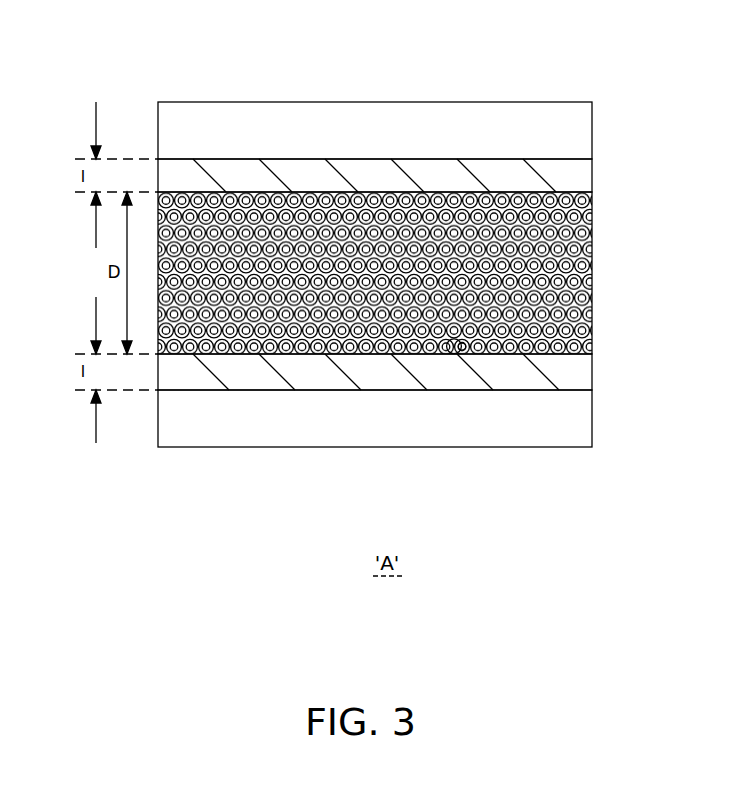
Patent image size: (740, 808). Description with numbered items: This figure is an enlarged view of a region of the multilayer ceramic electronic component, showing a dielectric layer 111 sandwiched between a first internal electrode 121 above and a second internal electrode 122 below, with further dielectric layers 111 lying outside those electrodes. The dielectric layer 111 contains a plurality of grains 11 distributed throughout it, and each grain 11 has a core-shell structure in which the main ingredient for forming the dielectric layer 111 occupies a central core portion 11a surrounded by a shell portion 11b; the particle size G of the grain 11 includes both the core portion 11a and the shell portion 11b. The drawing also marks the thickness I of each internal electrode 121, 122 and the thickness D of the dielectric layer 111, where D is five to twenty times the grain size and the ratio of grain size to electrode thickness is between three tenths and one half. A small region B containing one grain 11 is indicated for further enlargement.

The dielectric layer 111 is at (605, 353).
The first internal electrode 121 is at (582, 177).
The second internal electrode 122 is at (582, 376).
The grain 11 is at (515, 498).
The core portion 11a is at (462, 347).
The shell portion 11b is at (456, 350).
The region B is at (405, 258).